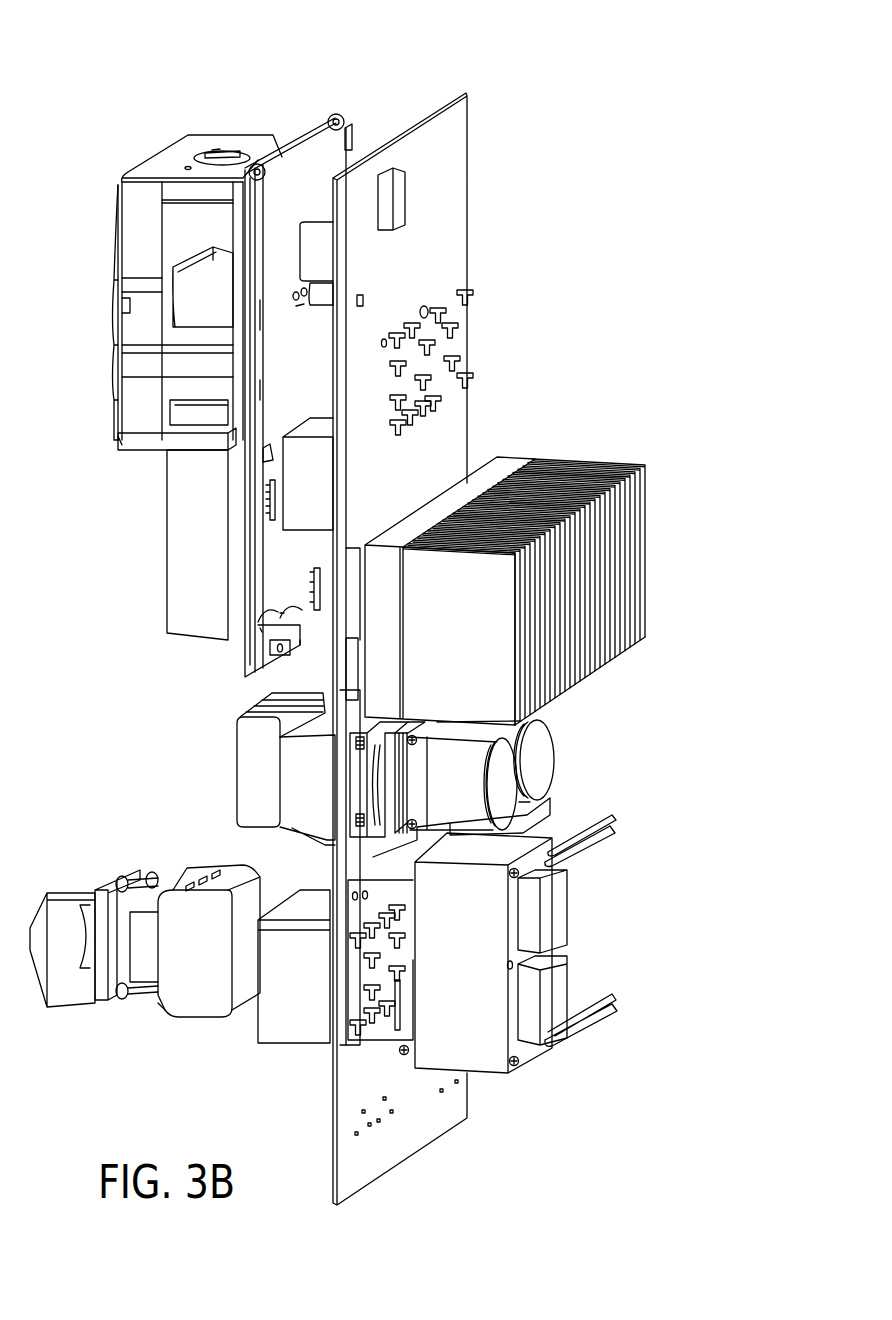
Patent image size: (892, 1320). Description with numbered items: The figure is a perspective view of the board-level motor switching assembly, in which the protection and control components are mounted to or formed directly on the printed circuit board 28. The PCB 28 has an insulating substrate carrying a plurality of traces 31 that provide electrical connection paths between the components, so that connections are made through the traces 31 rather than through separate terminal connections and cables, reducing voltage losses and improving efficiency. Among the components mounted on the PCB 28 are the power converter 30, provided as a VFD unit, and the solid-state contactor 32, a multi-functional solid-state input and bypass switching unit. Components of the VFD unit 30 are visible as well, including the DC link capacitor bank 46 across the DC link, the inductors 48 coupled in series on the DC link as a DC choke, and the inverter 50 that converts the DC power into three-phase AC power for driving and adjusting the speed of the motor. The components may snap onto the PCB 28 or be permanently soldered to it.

The printed circuit board 28 is at (430, 100).
The power converter 30 is at (565, 729).
The traces 31 is at (455, 362).
The solid-state contactor 32 is at (638, 572).
The DC link capacitor bank 46 is at (545, 750).
The inductors 48 is at (567, 953).
The inverter 50 is at (540, 770).